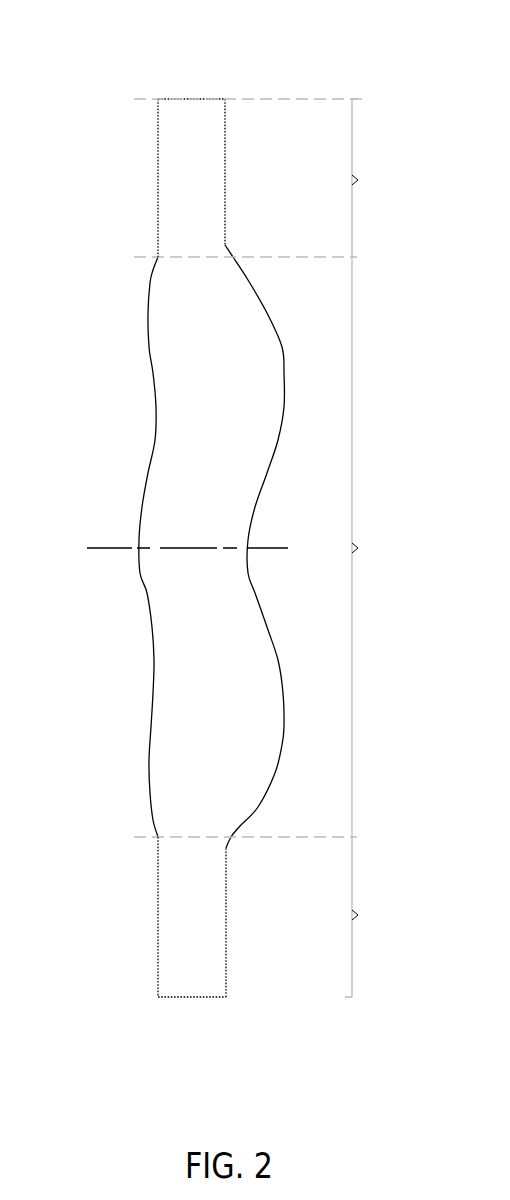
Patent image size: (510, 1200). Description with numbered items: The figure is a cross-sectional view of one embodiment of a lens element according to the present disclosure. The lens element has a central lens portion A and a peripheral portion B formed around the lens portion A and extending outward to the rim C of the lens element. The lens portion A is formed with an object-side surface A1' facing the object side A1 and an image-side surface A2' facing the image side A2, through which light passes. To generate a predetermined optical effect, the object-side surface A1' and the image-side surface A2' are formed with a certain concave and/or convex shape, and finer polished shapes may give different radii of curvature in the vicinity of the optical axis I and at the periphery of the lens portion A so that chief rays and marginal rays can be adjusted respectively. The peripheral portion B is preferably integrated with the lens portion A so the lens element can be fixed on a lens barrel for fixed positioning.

The lens portion A is at (255, 546).
The peripheral portion B is at (254, 548).
The rim C is at (190, 99).
The optical axis I is at (207, 548).
The object-side surface A1' is at (117, 487).
The image-side surface A2' is at (285, 480).
The object side A1 is at (91, 38).
The image side A2 is at (412, 37).